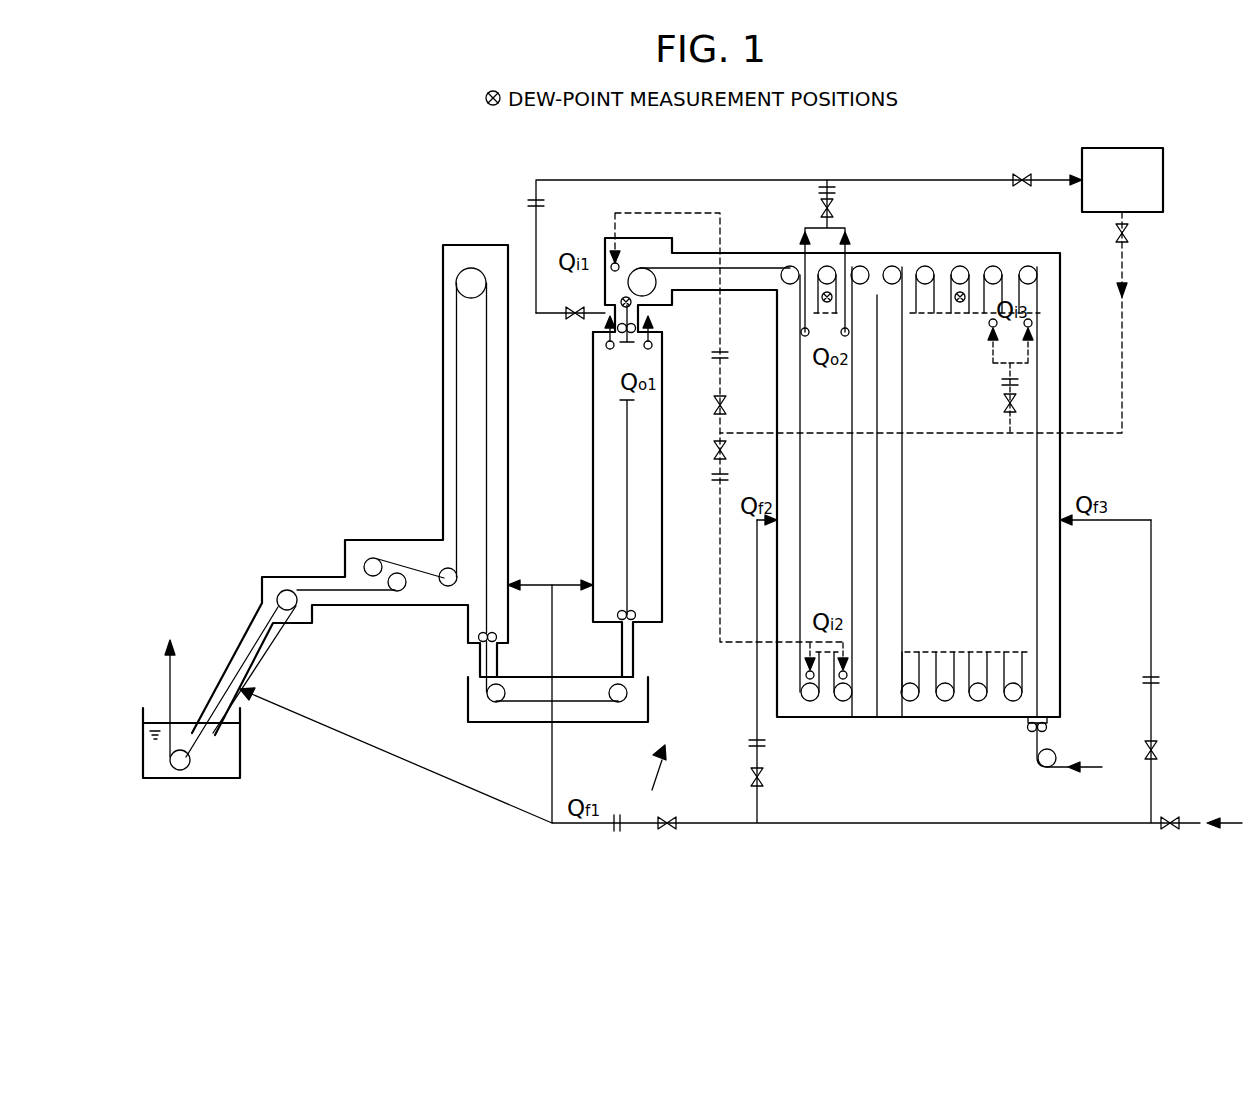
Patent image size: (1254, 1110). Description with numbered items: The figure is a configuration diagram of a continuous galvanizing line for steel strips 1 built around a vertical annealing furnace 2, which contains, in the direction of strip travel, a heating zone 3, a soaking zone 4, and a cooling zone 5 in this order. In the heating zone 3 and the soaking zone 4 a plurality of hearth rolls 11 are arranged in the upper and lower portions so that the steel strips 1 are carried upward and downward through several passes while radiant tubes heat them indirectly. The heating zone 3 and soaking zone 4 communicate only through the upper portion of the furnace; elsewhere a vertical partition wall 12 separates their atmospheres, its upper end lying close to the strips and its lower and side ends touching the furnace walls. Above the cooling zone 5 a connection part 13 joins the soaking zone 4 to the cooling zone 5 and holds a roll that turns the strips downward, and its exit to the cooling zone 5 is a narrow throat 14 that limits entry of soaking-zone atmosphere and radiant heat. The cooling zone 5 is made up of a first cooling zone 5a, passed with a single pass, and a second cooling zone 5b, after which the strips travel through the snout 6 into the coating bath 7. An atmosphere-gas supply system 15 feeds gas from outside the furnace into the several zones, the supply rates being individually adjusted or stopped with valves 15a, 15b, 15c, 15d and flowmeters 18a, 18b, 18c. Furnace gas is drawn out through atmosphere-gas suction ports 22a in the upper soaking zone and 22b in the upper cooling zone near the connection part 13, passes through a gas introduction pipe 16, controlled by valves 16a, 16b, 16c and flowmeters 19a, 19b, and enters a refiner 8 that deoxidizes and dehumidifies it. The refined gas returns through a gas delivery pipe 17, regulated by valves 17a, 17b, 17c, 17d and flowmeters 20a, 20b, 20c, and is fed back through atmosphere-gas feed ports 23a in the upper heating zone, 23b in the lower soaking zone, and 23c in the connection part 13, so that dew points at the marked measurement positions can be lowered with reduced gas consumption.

The steel strips 1 is at (1052, 771).
The annealing furnace 2 is at (652, 778).
The heating zone 3 is at (936, 723).
The soaking zone 4 is at (789, 723).
The cooling zone 5 is at (588, 528).
The first cooling zone 5a is at (587, 478).
The second cooling zone 5b is at (510, 478).
The snout 6 is at (256, 657).
The coating bath 7 is at (240, 758).
The refiner 8 is at (1165, 178).
The hearth rolls 11 is at (995, 266).
The partition wall 12 is at (873, 701).
The connection part 13 is at (605, 293).
The throat 14 is at (640, 313).
The atmosphere-gas supply system 15 is at (1189, 820).
The valve 15a is at (1172, 832).
The valve 15b is at (1157, 750).
The valve 15c is at (763, 779).
The valve 15d is at (669, 832).
The gas introduction pipe 16 is at (939, 178).
The valve 16a is at (1023, 174).
The valve 16b is at (835, 212).
The valve 16c is at (573, 319).
The gas delivery pipe 17 is at (1124, 333).
The valve 17a is at (1128, 234).
The valve 17b is at (1004, 403).
The valve 17c is at (726, 452).
The valve 17d is at (748, 392).
The flowmeter 18a is at (1160, 680).
The flowmeter 18b is at (749, 743).
The flowmeter 18c is at (619, 832).
The flowmeter 19a is at (835, 190).
The flowmeter 19b is at (527, 203).
The flowmeter 20a is at (1002, 382).
The flowmeter 20b is at (717, 360).
The flowmeter 20c is at (713, 478).
The atmosphere-gas suction ports 22a is at (841, 330).
The atmosphere-gas suction ports 22b is at (644, 348).
The atmosphere-gas feed ports 23a is at (1024, 324).
The atmosphere-gas feed ports 23b is at (843, 701).
The atmosphere-gas feed port 23c is at (614, 240).